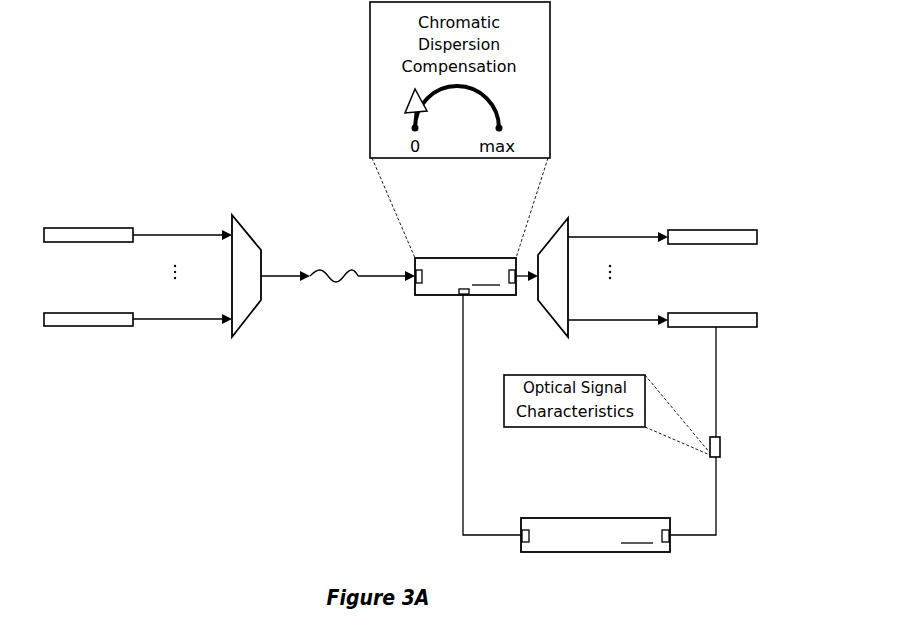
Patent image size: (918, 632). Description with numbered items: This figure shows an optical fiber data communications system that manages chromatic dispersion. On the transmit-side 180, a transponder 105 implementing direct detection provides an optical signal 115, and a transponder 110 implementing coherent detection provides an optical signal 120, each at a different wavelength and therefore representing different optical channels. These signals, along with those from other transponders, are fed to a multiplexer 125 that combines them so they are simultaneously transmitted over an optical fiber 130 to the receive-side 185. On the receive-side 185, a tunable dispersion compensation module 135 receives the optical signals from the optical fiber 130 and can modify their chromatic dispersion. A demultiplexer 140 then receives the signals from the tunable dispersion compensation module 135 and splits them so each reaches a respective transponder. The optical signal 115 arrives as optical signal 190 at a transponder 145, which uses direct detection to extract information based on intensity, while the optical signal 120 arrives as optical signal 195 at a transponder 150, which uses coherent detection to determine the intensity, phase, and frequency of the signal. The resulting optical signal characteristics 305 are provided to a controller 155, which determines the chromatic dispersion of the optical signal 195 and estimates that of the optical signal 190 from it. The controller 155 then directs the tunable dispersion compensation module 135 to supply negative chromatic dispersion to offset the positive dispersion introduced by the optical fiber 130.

The transponder 105 is at (126, 228).
The transponder 110 is at (126, 327).
The optical signal 115 is at (193, 233).
The optical signal 120 is at (193, 322).
The multiplexer 125 is at (262, 248).
The optical fiber 130 is at (336, 250).
The tunable dispersion compensation module (DCM) 135 is at (465, 276).
The demultiplexer 140 is at (567, 218).
The transponder 145 is at (738, 230).
The transponder 150 is at (738, 328).
The controller 155 is at (595, 535).
The transmit-side 180 is at (252, 70).
The receive-side 185 is at (674, 75).
The optical signal 190 is at (640, 237).
The optical signal 195 is at (640, 320).
The optical signal characteristics 305 is at (722, 446).